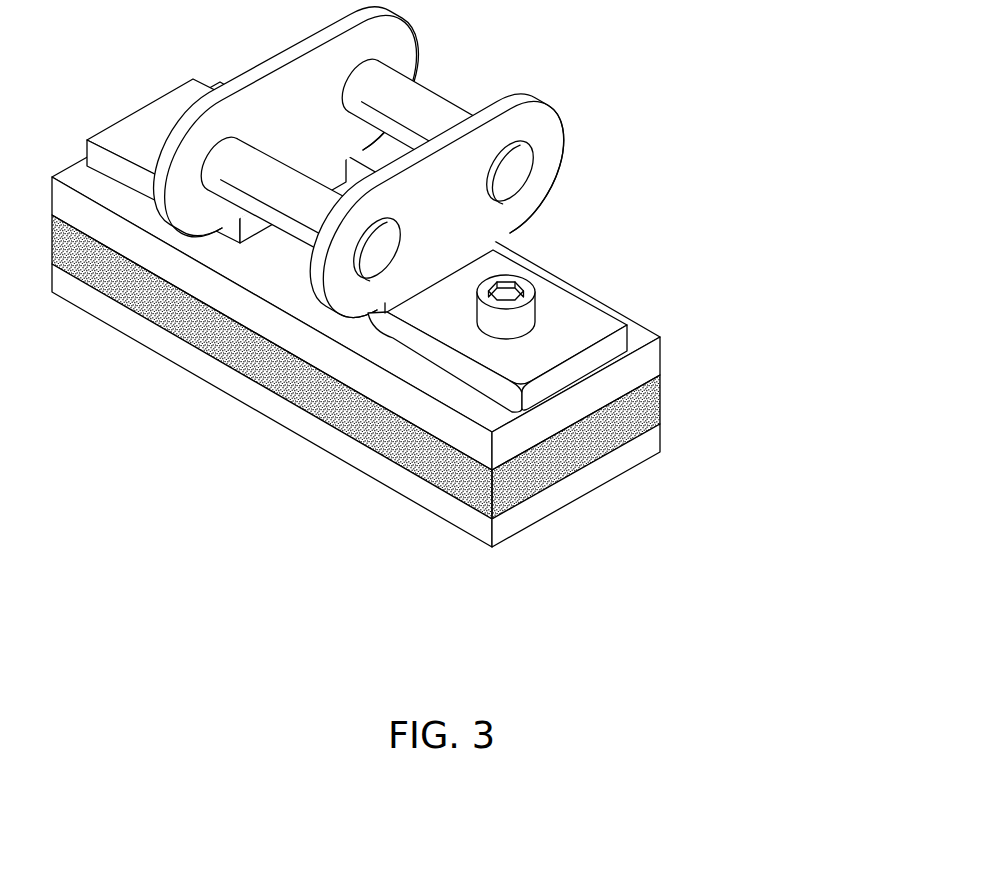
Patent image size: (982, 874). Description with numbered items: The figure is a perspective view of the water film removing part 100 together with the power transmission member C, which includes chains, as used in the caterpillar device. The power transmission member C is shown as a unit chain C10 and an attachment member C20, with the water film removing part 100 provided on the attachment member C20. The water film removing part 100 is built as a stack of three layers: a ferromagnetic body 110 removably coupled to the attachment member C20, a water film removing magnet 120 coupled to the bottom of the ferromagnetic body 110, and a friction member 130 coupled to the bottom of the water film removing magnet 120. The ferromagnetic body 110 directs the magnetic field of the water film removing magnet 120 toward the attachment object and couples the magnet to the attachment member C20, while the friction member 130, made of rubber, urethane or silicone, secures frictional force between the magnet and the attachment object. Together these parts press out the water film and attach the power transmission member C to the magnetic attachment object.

The water film removing part 100 is at (444, 314).
The ferromagnetic body 110 is at (645, 358).
The water film removing magnet 120 is at (645, 401).
The friction member 130 is at (770, 366).
The power transmission member C is at (418, 209).
The unit chain C10 is at (540, 132).
The attachment member C20 is at (567, 322).